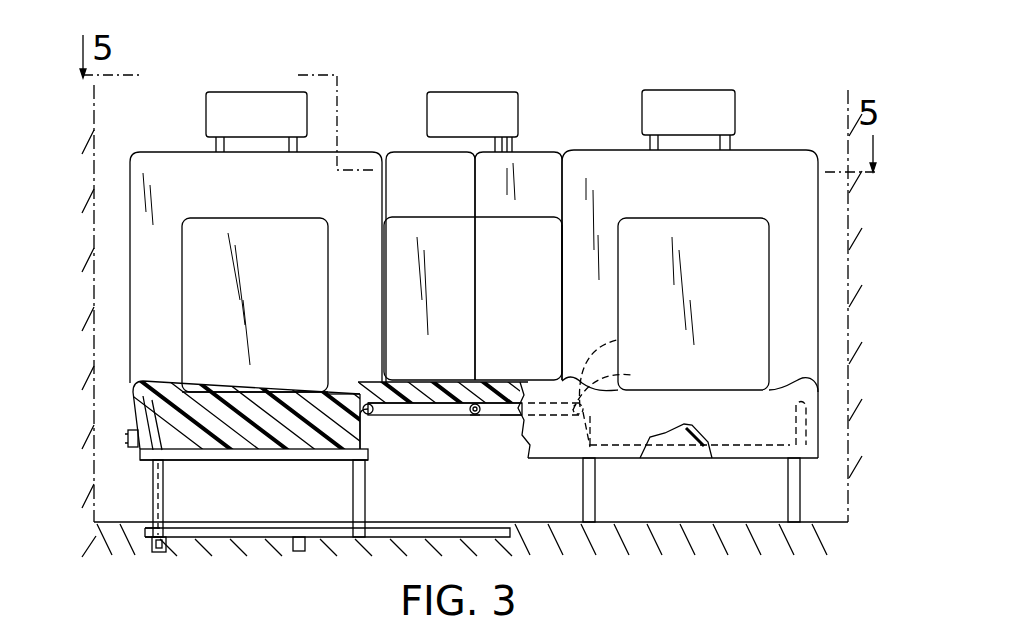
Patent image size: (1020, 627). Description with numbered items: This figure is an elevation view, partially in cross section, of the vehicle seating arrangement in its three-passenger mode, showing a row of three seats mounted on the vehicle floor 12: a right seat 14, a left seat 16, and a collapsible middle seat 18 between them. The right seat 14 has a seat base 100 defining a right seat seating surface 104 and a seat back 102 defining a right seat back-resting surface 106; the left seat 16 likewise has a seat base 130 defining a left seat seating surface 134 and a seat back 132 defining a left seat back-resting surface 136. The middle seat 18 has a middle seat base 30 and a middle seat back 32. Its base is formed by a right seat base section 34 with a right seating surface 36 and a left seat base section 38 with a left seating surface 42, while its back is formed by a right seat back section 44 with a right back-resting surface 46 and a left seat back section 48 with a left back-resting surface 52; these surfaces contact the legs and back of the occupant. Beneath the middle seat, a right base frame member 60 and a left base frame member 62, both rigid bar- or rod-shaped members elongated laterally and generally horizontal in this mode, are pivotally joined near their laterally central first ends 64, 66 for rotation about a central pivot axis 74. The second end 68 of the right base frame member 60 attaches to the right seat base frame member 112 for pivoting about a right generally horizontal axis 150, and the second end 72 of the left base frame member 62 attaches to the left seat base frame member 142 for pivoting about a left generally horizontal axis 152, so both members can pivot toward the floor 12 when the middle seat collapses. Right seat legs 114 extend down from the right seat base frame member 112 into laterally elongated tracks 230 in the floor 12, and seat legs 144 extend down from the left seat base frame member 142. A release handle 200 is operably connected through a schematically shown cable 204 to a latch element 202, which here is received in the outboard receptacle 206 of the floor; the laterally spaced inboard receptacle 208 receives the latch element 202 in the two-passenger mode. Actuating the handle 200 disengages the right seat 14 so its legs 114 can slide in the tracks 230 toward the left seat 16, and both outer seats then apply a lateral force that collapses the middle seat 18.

The vehicle floor 12 is at (152, 550).
The right seat 14 is at (242, 70).
The left seat 16 is at (697, 70).
The middle seat 18 is at (497, 72).
The middle seat base 30 is at (541, 471).
The middle seat back 32 is at (455, 150).
The right seat base section 34 is at (418, 395).
The right seating surface 36 is at (427, 380).
The left seat base section 38 is at (550, 454).
The left seating surface 42 is at (533, 380).
The right seat back section 44 is at (412, 150).
The right back-resting surface 46 is at (397, 243).
The left seat back section 48 is at (530, 150).
The left back-resting surface 52 is at (560, 233).
The right base frame member 60 is at (440, 423).
The left base frame member 62 is at (505, 427).
The first end of right base frame member 64 is at (462, 407).
The first end of left base frame member 66 is at (490, 407).
The second end of right base frame member 68 is at (382, 412).
The second end of left base frame member 72 is at (617, 341).
The pivot axis 74 is at (475, 413).
The seat base 100 is at (265, 454).
The seat back 102 is at (181, 147).
The right seat seating surface 104 is at (220, 390).
The right seat back-resting surface 106 is at (200, 275).
The right seat base frame member 112 is at (306, 461).
The right seat legs 114 is at (155, 482).
The seat base 130 is at (723, 466).
The seat back 132 is at (772, 145).
The left seat seating surface 134 is at (723, 390).
The left seat back-resting surface 136 is at (745, 272).
The left seat base frame member 142 is at (661, 466).
The seat legs 144 is at (788, 493).
The right generally horizontal axis 150 is at (340, 392).
The left generally horizontal axis 152 is at (632, 376).
The release handle 200 is at (130, 440).
The latch element 202 is at (165, 540).
The cable 204 is at (165, 489).
The outboard receptacle 206 is at (160, 550).
The inboard receptacle 208 is at (305, 551).
The tracks 230 is at (420, 537).